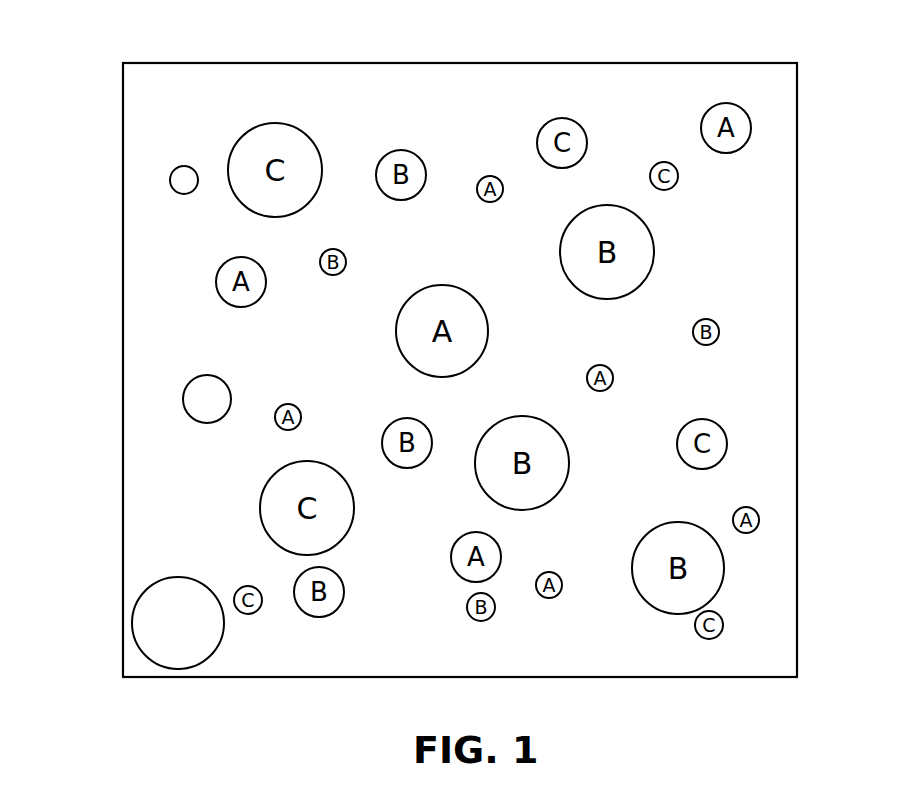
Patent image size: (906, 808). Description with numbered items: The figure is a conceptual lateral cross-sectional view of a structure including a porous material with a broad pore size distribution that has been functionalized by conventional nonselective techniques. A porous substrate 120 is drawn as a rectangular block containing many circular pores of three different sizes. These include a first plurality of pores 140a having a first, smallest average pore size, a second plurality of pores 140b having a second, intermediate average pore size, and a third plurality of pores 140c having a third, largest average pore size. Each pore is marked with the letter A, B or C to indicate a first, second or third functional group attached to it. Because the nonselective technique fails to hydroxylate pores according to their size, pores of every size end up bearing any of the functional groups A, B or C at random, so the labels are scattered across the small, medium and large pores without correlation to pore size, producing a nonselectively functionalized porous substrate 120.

The porous substrate 120 is at (252, 82).
The first plurality of pores 140a is at (169, 180).
The second plurality of pores 140b is at (182, 400).
The third plurality of pores 140c is at (134, 608).